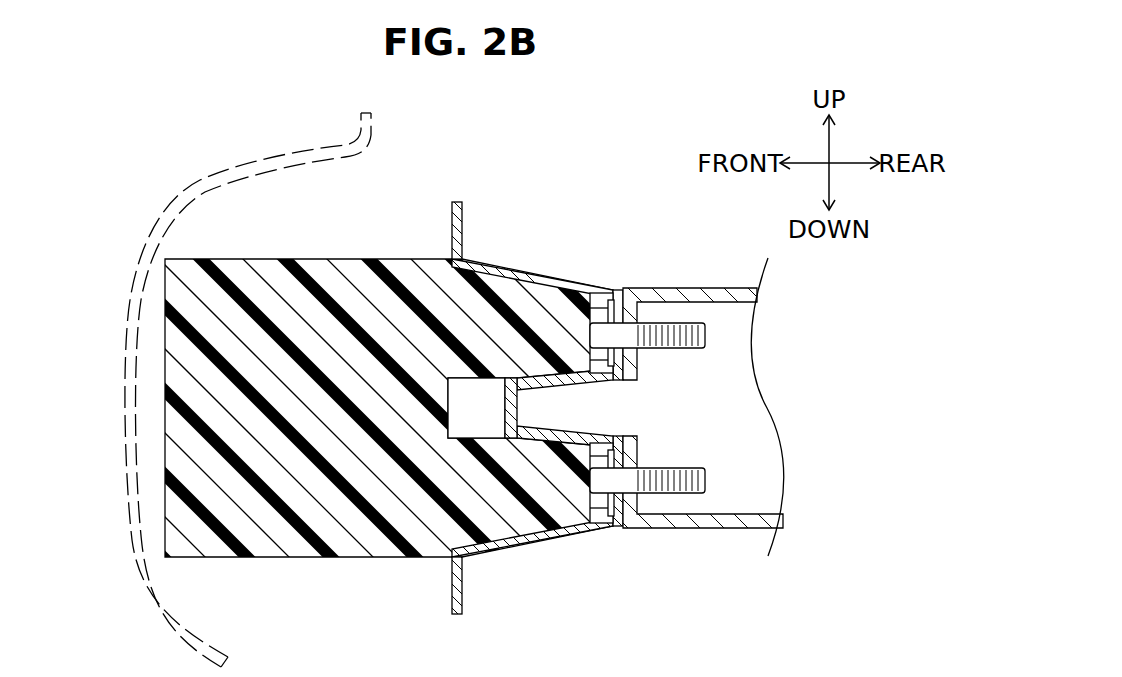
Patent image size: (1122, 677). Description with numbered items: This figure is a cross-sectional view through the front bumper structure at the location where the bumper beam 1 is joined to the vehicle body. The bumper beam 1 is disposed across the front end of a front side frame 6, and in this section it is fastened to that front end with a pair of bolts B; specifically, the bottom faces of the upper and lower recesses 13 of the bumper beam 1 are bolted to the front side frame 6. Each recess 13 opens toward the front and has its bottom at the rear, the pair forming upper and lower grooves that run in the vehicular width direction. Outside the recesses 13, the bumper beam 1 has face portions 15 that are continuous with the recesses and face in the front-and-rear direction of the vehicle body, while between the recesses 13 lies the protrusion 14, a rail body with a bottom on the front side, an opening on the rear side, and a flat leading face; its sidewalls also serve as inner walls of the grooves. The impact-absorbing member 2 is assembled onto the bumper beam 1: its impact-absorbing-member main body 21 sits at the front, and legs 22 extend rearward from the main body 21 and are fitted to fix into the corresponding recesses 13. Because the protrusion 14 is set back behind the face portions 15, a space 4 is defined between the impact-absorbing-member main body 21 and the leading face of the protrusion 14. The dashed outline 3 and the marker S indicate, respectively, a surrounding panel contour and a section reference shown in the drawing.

The bumper beam 1 is at (443, 408).
The impact-absorbing member 2 is at (422, 396).
The exterior panel 3 is at (303, 149).
The space 4 is at (470, 403).
The front side frame 6 is at (698, 290).
The recess 13 is at (612, 376).
The protrusion 14 is at (478, 410).
The face portion 15 is at (452, 238).
The impact-absorbing-member main body 21 is at (266, 292).
The leg 22 is at (582, 300).
The bolt B is at (705, 338).
The section S is at (608, 169).